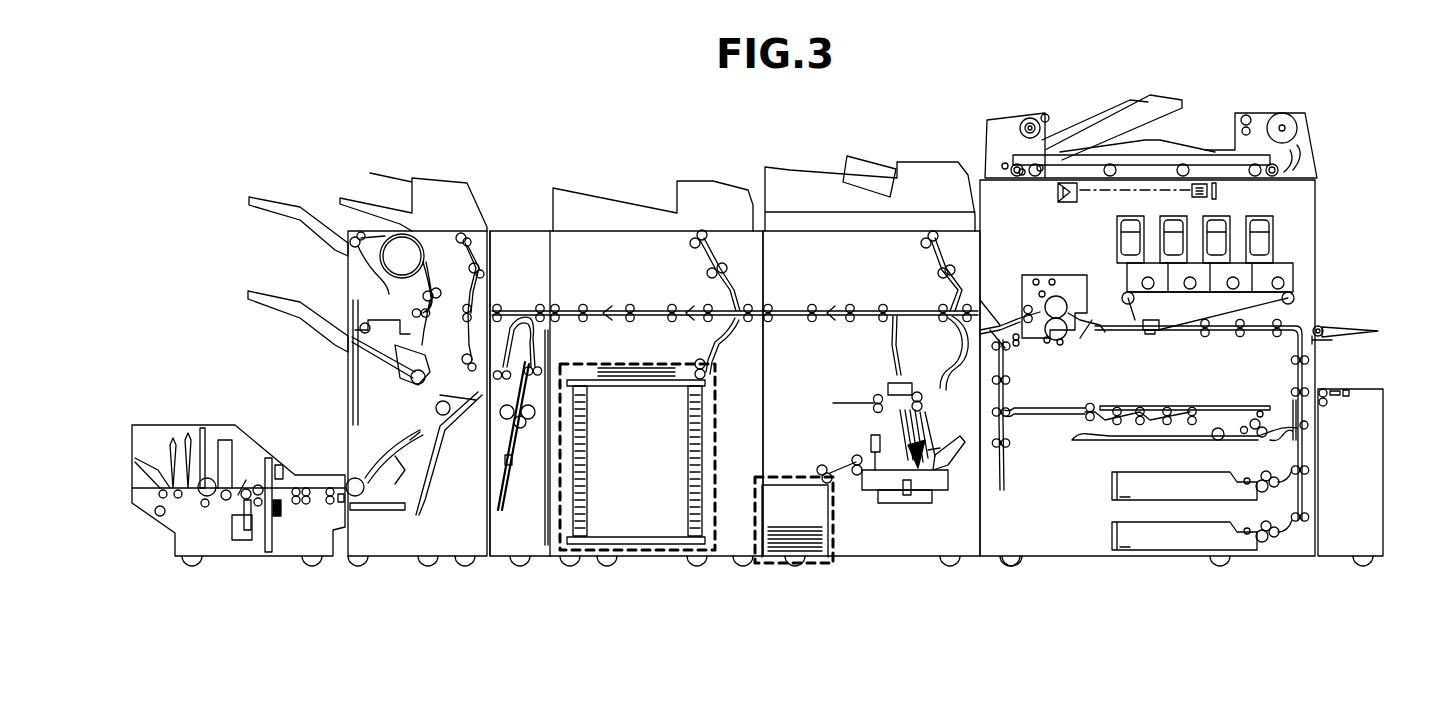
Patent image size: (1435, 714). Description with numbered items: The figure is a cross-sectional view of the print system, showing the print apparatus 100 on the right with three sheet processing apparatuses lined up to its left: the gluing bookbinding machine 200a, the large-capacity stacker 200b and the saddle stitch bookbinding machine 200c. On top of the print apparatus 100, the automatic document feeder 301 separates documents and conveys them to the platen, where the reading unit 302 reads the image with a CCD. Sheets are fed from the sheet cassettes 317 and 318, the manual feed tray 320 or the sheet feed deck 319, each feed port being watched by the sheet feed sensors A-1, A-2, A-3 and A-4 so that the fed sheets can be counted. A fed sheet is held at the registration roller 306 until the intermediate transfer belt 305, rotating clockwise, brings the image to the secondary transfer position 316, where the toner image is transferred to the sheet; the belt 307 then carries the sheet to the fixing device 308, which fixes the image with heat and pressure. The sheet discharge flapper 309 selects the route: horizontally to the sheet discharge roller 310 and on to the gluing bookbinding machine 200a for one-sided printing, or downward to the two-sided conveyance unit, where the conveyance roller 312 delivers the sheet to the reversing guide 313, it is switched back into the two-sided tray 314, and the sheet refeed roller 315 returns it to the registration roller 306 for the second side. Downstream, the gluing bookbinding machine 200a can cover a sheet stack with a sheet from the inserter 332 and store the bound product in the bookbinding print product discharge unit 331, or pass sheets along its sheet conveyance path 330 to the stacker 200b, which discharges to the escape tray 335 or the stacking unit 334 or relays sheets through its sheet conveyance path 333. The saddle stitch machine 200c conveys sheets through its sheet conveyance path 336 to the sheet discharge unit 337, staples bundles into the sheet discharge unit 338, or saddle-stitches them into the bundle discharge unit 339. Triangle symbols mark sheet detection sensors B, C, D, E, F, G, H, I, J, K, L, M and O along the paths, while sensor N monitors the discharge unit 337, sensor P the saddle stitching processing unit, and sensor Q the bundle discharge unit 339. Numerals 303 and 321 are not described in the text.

The print apparatus 100 is at (1380, 582).
The gluing bookbinding machine 200a is at (760, 582).
The large-capacity stacker 200b is at (760, 582).
The saddle stitch bookbinding machine 200c is at (133, 582).
The automatic document feeder 301 is at (1188, 161).
The reading unit 302 is at (1066, 204).
The sheet feeding roller (lower cassette) 303 is at (1256, 534).
The intermediate transfer belt 305 is at (1154, 324).
The registration roller 306 is at (1205, 336).
The belt 307 is at (1062, 360).
The fixing device 308 is at (1041, 272).
The sheet discharge flapper 309 is at (1002, 328).
The sheet discharge roller 310 is at (988, 321).
The conveyance roller 312 is at (1011, 377).
The reversing guide 313 is at (1005, 442).
The two-sided tray 314 is at (1164, 444).
The sheet refeed roller 315 is at (1251, 428).
The secondary transfer position 316 is at (1153, 336).
The sheet cassette 317 is at (1112, 484).
The sheet cassette 318 is at (1112, 538).
The sheet feed deck 319 is at (1377, 398).
The manual feed tray 320 is at (1332, 330).
The sheet feeding roller (upper cassette) 321 is at (1256, 478).
The sheet conveyance path 330 is at (853, 312).
The bookbinding print product discharge unit 331 is at (793, 477).
The inserter 332 is at (875, 166).
The sheet conveyance path 333 is at (641, 312).
The stacking unit 334 is at (613, 364).
The escape tray 335 is at (645, 199).
The sheet conveyance path 336 is at (431, 231).
The sheet discharge unit 337 is at (296, 198).
The sheet discharge unit 338 is at (281, 291).
The saddle stitching bookbinding bundle discharge unit 339 is at (219, 425).
The sheet detection sensor A-1 is at (1294, 468).
The sheet detection sensor A-2 is at (1294, 522).
The sheet detection sensor A-3 is at (1300, 313).
The sheet detection sensor A-4 is at (1306, 378).
The sheet detection sensor B is at (1166, 344).
The sheet detection sensor C is at (1009, 300).
The sheet detection sensor D is at (953, 330).
The sheet detection sensor E is at (918, 261).
The sheet detection sensor F is at (882, 376).
The sheet detection sensor G is at (936, 410).
The sheet detection sensor H is at (790, 330).
The sheet detection sensor I is at (743, 338).
The sheet detection sensor J is at (720, 378).
The sheet detection sensor K is at (688, 258).
The sheet detection sensor L is at (568, 330).
The sheet detection sensor M is at (435, 310).
The sheet detection sensor N is at (366, 256).
The sheet detection sensor O is at (427, 328).
The sheet detection sensor P is at (446, 511).
The sheet detection sensor Q is at (160, 512).